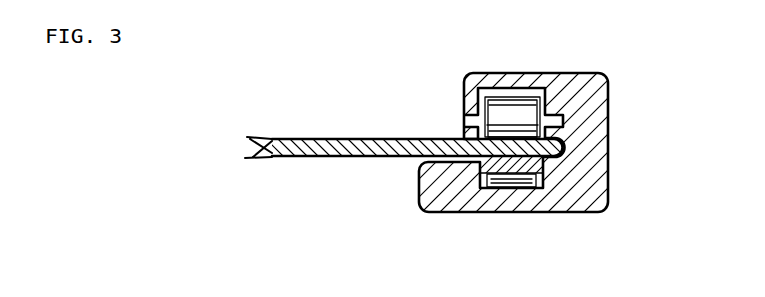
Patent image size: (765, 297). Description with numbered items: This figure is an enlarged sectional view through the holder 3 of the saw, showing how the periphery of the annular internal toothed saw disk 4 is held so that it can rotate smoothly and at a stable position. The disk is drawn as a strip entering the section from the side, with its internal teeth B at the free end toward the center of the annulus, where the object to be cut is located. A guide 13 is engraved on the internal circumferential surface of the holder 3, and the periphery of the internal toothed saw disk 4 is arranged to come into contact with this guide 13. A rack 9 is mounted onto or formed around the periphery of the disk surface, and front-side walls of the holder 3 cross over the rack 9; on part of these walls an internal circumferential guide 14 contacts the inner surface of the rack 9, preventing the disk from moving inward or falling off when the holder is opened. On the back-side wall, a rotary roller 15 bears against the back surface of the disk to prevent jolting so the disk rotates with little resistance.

The holder 3 is at (607, 200).
The internal toothed saw disk 4 is at (325, 140).
The rack 9 is at (525, 182).
The guide 13 is at (563, 122).
The internal circumferential guide 14 is at (493, 183).
The rotary roller 15 is at (520, 113).
The internal teeth B is at (257, 137).